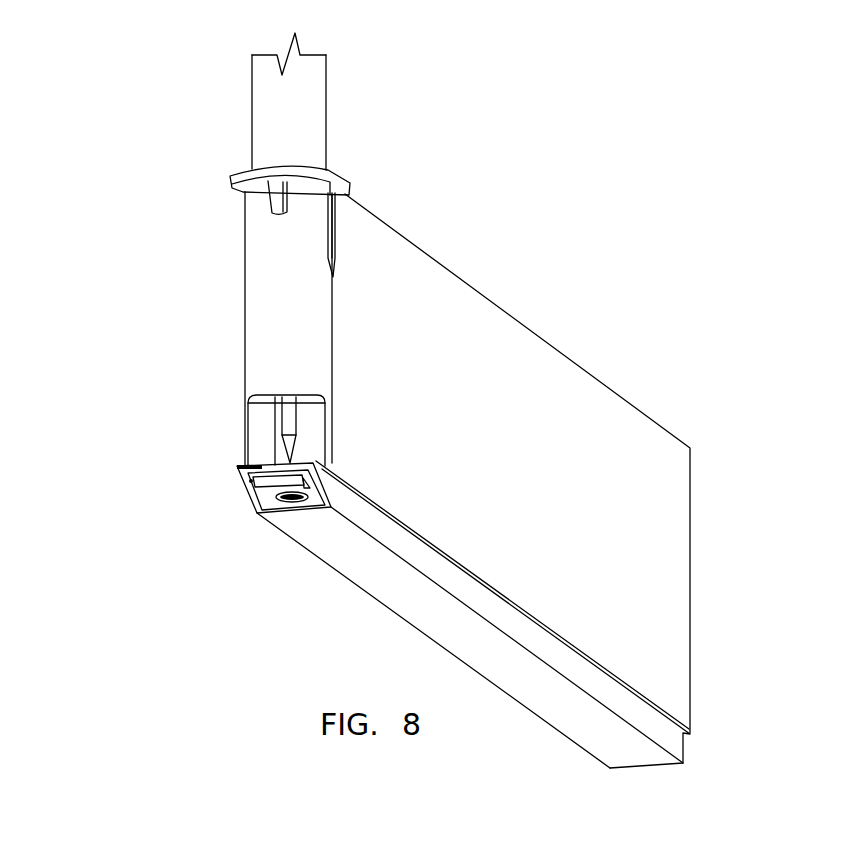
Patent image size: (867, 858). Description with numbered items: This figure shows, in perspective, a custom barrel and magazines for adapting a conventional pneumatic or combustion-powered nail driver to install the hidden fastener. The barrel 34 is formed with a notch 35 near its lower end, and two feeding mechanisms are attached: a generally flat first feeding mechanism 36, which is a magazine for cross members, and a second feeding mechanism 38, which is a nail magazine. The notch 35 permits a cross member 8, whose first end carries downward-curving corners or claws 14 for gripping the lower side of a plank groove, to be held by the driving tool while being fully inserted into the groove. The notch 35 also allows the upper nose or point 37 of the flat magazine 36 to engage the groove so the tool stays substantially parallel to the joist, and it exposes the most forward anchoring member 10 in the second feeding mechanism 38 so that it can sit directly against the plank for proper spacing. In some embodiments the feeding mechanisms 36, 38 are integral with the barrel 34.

The barrel 34 is at (265, 153).
The notch 35 is at (253, 455).
The anchoring member 10 is at (285, 430).
The upper nose or point 37 is at (240, 467).
The cross member 8 is at (258, 506).
The downward-curving corners or claws 14 is at (252, 481).
The second feeding mechanism 38 is at (412, 280).
The first feeding mechanism 36 is at (358, 567).